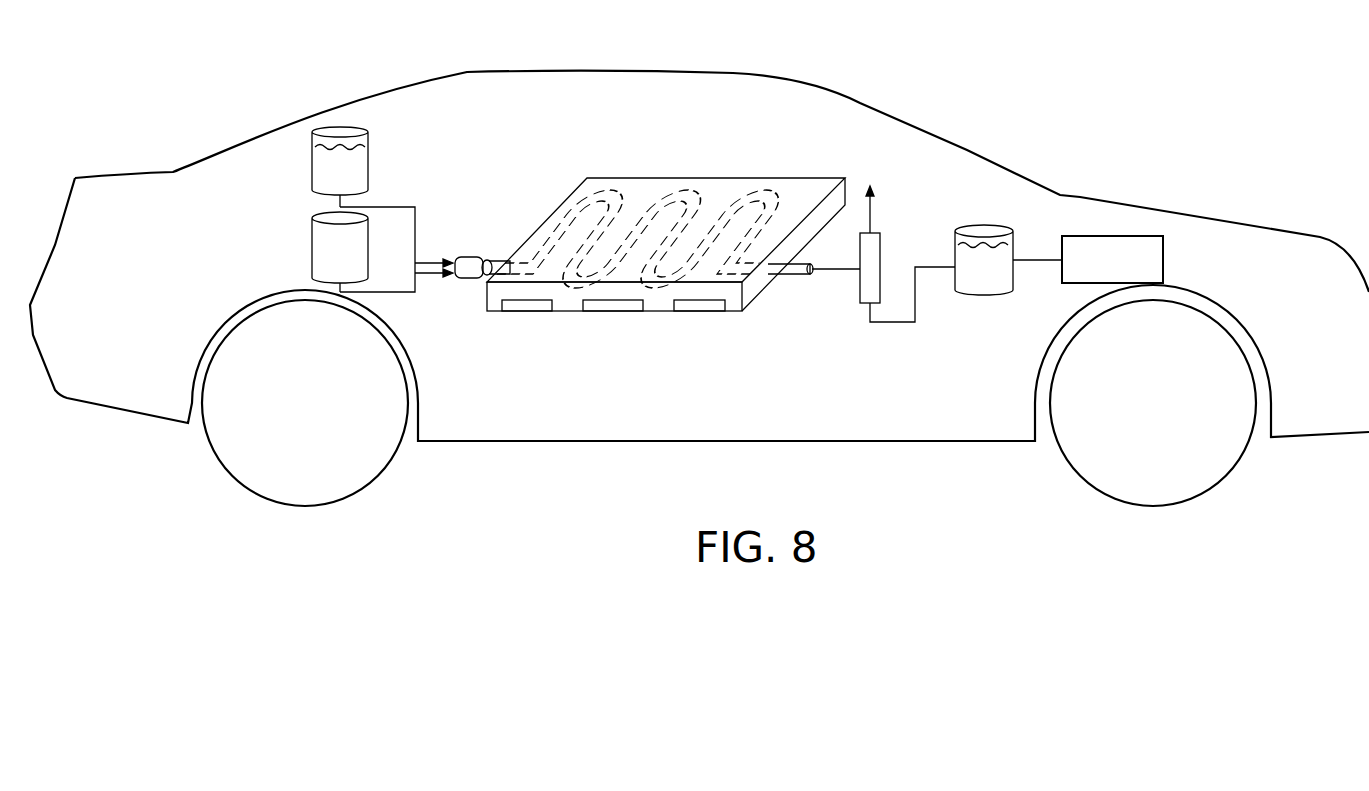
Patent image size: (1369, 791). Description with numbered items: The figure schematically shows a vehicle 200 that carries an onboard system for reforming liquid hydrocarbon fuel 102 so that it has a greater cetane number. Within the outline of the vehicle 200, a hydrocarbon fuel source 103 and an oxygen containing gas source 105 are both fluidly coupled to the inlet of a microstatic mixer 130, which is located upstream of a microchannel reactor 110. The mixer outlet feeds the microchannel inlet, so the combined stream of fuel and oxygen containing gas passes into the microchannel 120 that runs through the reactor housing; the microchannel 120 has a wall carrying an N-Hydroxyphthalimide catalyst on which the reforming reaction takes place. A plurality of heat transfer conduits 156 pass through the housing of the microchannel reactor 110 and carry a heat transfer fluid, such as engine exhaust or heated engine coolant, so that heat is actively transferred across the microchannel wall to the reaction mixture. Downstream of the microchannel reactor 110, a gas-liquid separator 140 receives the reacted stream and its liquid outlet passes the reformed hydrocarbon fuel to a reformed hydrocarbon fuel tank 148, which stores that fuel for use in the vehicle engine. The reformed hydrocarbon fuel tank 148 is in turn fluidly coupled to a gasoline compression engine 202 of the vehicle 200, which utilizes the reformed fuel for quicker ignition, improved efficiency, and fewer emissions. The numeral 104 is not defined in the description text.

The vehicle 200 is at (633, 70).
The hydrocarbon fuel 102 is at (415, 207).
The hydrocarbon fuel source 103 is at (317, 165).
The oxygen containing gas source 105 is at (317, 250).
The supply conduit 104 is at (427, 274).
The microstatic mixer 130 is at (477, 256).
The microchannel reactor 110 is at (702, 178).
The microchannel 120 is at (773, 193).
The heat transfer conduits 156 is at (528, 311).
The gas-liquid separator 140 is at (880, 245).
The reformed hydrocarbon fuel tank 148 is at (977, 285).
The gasoline compression engine 202 is at (1163, 258).